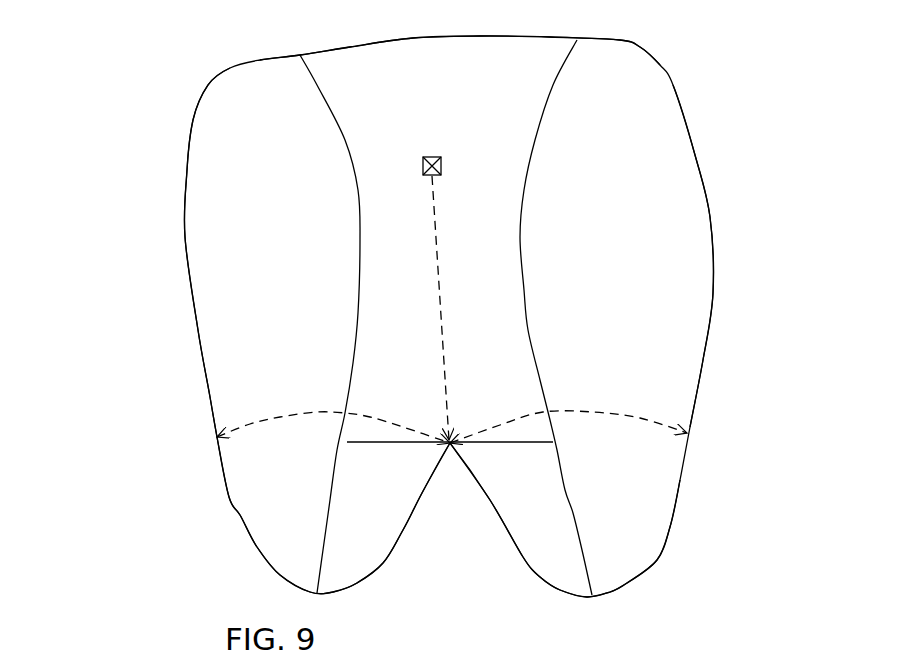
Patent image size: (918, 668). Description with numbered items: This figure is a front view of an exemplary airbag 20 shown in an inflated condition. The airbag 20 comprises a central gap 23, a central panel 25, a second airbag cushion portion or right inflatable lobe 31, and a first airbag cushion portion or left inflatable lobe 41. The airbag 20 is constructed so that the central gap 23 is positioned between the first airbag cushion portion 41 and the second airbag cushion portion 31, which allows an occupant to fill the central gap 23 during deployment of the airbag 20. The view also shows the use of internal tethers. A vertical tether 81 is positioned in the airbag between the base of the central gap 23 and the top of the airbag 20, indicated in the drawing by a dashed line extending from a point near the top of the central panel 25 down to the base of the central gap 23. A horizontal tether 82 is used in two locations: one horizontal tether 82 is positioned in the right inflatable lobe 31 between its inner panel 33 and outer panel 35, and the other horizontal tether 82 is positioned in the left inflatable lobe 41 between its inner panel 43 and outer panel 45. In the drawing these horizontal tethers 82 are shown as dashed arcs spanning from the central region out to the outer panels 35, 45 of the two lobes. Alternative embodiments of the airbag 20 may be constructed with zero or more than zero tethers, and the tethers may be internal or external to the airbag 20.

The airbag 20 is at (180, 69).
The central panel 25 is at (490, 118).
The outer panel 35 is at (662, 243).
The outer panel 45 is at (215, 278).
The first airbag cushion portion 41 is at (197, 507).
The second airbag cushion portion 31 is at (723, 515).
The inner panel 43 is at (352, 548).
The inner panel 33 is at (540, 548).
The central gap 23 is at (432, 493).
The vertical tether 81 is at (430, 212).
The horizontal tether 82 is at (285, 413).